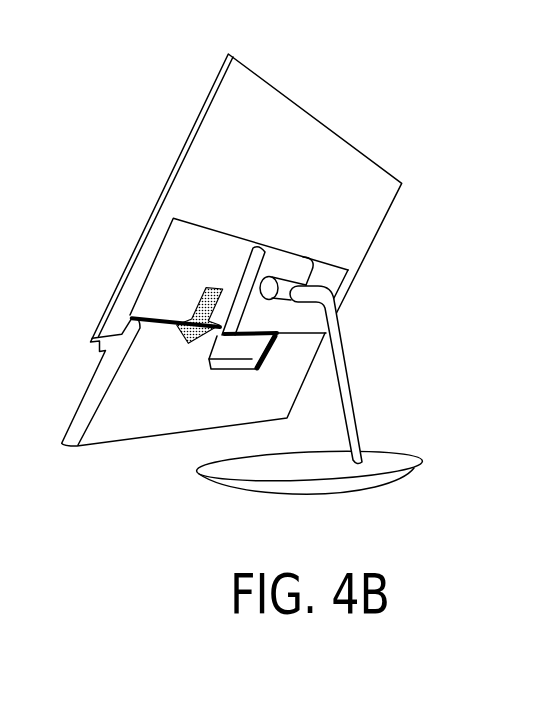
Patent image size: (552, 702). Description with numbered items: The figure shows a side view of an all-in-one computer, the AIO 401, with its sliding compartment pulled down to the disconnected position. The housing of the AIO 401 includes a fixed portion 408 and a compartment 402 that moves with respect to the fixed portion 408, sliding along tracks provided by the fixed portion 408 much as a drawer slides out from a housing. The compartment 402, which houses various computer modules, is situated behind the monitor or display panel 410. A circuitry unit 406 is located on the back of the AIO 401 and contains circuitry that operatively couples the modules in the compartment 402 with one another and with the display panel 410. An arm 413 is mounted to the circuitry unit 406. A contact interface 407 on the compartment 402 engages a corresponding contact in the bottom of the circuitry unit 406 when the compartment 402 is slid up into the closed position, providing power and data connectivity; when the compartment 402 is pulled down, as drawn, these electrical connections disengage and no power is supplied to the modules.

The AIO 401 is at (285, 294).
The compartment 402 is at (141, 438).
The circuitry unit 406 is at (291, 260).
The contact interface 407 is at (218, 338).
The fixed portion 408 is at (187, 252).
The display panel 410 is at (262, 112).
The arm 413 is at (343, 380).